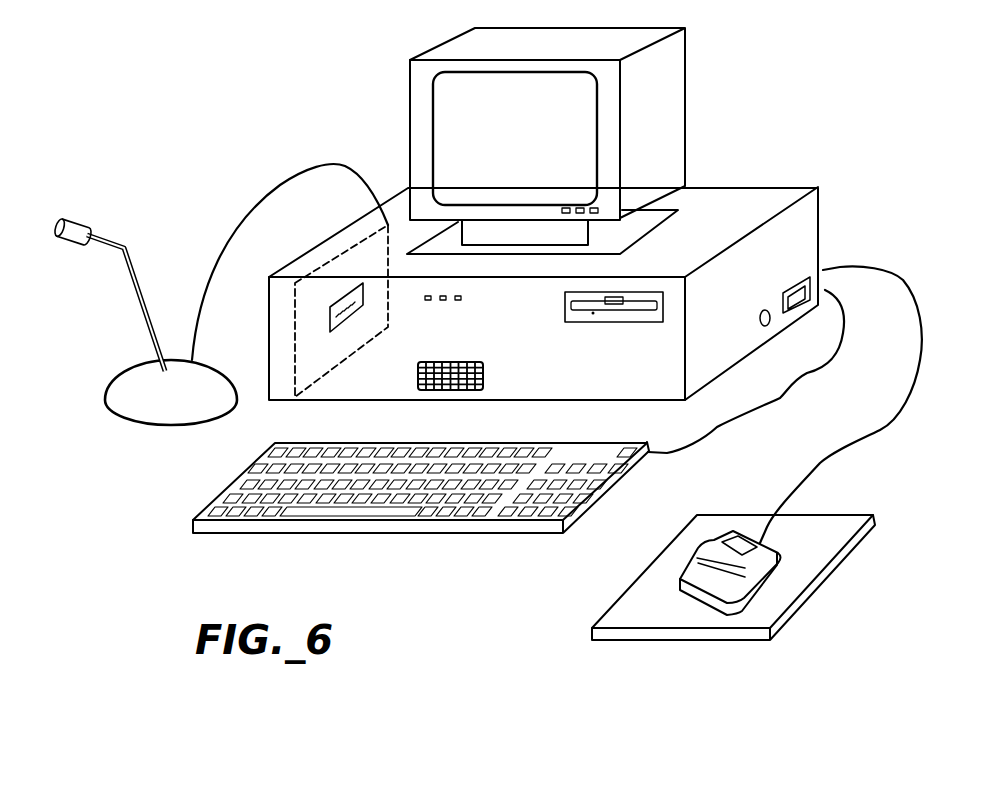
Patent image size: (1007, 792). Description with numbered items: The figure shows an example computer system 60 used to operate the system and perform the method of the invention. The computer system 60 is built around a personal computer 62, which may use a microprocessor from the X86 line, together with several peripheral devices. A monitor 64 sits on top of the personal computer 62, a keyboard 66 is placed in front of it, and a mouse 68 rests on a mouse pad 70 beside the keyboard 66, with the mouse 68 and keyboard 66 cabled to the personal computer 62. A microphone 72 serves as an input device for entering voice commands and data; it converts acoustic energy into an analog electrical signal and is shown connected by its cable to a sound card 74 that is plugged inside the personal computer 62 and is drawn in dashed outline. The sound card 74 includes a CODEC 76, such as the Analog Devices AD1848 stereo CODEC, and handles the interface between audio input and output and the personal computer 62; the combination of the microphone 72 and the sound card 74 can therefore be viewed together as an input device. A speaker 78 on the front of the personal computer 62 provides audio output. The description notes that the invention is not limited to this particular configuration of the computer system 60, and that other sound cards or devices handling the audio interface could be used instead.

The computer system 60 is at (528, 640).
The personal computer 62 is at (778, 186).
The monitor 64 is at (677, 118).
The keyboard 66 is at (612, 482).
The mouse 68 is at (727, 530).
The mouse pad 70 is at (793, 619).
The microphone 72 is at (158, 423).
The sound card 74 is at (313, 398).
The CODEC 76 is at (330, 332).
The speaker 78 is at (440, 391).